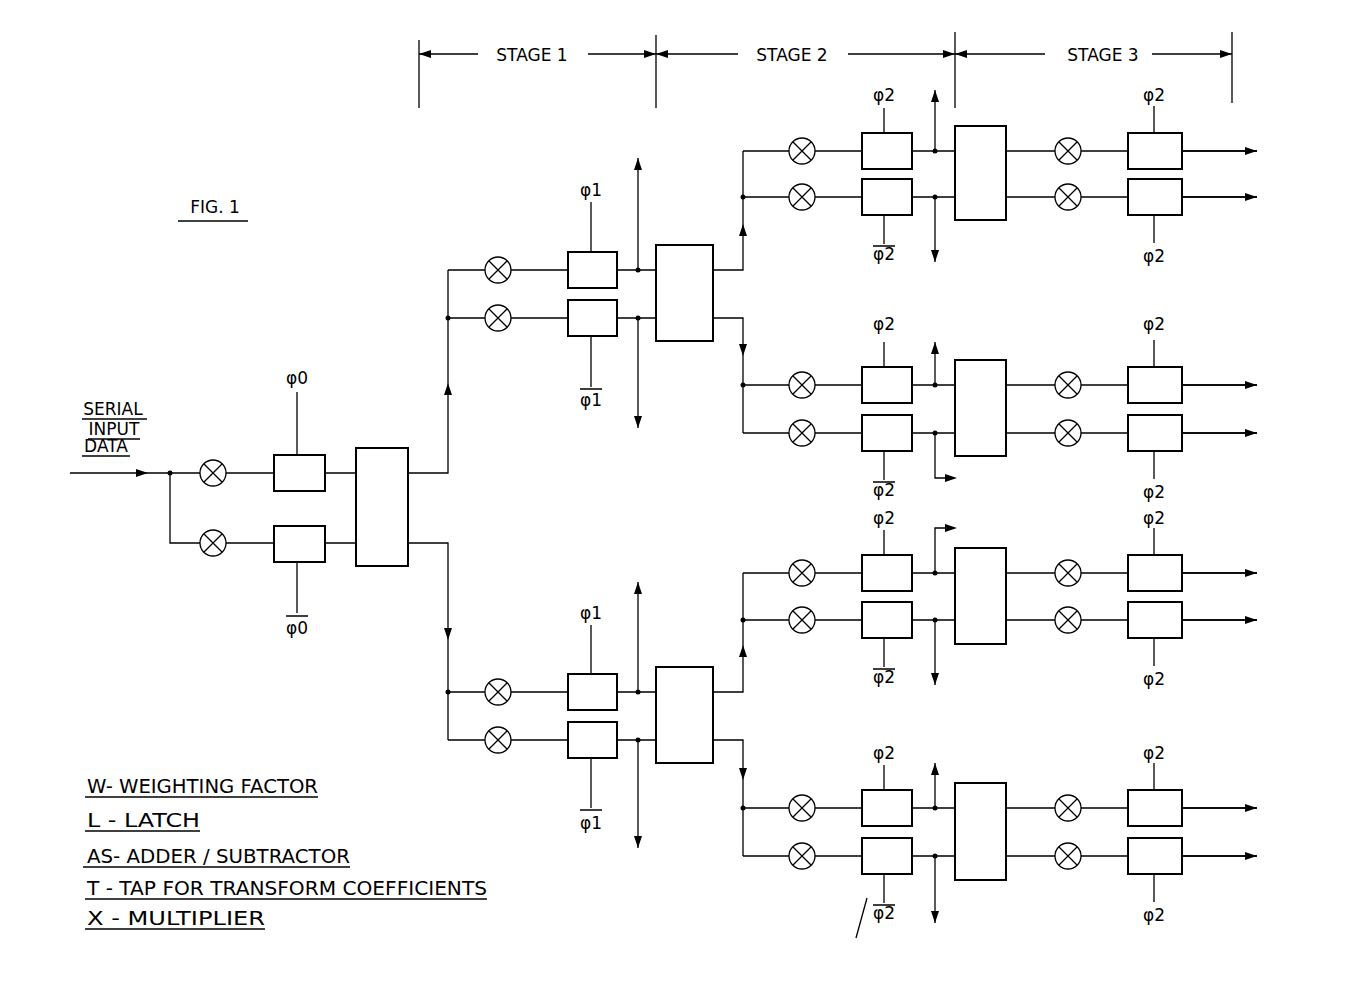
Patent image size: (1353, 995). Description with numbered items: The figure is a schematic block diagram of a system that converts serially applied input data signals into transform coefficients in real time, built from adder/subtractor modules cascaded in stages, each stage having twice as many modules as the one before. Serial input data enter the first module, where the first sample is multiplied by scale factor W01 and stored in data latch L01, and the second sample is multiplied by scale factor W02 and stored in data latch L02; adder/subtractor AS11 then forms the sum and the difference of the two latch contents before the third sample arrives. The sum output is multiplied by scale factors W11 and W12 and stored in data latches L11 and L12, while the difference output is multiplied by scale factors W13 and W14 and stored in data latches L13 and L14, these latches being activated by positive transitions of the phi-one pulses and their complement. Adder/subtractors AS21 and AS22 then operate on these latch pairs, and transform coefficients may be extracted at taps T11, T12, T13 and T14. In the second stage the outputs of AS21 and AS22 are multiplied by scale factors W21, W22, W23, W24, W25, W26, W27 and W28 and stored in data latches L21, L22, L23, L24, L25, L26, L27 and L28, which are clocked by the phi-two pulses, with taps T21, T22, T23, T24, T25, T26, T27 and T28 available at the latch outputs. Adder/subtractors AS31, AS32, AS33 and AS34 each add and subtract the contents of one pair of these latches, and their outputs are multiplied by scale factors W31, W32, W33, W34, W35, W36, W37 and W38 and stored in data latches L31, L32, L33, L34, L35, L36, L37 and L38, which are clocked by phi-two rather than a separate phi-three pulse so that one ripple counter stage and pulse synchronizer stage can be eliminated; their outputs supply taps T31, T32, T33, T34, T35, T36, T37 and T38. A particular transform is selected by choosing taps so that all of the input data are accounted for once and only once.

The scale factor W01 is at (213, 460).
The scale factor W02 is at (213, 556).
The scale factor W11 is at (498, 257).
The scale factor W12 is at (498, 331).
The scale factor W13 is at (498, 679).
The scale factor W14 is at (498, 753).
The scale factor W21 is at (802, 138).
The scale factor W22 is at (802, 210).
The scale factor W23 is at (802, 372).
The scale factor W24 is at (802, 446).
The scale factor W25 is at (802, 560).
The scale factor W26 is at (802, 633).
The scale factor W27 is at (802, 795).
The scale factor W28 is at (802, 869).
The scale factor W31 is at (1068, 138).
The scale factor W32 is at (1068, 210).
The scale factor W33 is at (1068, 372).
The scale factor W34 is at (1068, 446).
The scale factor W35 is at (1068, 560).
The scale factor W36 is at (1068, 633).
The scale factor W37 is at (1068, 795).
The scale factor W38 is at (1068, 869).
The data latch L01 is at (299, 473).
The data latch L02 is at (299, 544).
The data latch L11 is at (592, 270).
The data latch L12 is at (592, 318).
The data latch L13 is at (592, 692).
The data latch L14 is at (592, 740).
The data latch L21 is at (887, 151).
The data latch L22 is at (887, 197).
The data latch L23 is at (887, 385).
The data latch L24 is at (887, 433).
The data latch L25 is at (887, 573).
The data latch L26 is at (887, 620).
The data latch L27 is at (887, 808).
The data latch L28 is at (887, 856).
The data latch L31 is at (1155, 151).
The data latch L32 is at (1155, 197).
The data latch L33 is at (1155, 385).
The data latch L34 is at (1155, 433).
The data latch L35 is at (1155, 573).
The data latch L36 is at (1155, 620).
The data latch L37 is at (1155, 808).
The data latch L38 is at (1155, 856).
The adder/subtractor AS11 is at (381, 555).
The adder/subtractor AS21 is at (686, 322).
The adder/subtractor AS22 is at (675, 752).
The adder/subtractor AS31 is at (985, 205).
The adder/subtractor AS32 is at (975, 378).
The adder/subtractor AS33 is at (968, 622).
The adder/subtractor AS34 is at (980, 865).
The tap T11 is at (639, 202).
The tap T12 is at (639, 387).
The tap T13 is at (639, 624).
The tap T14 is at (642, 811).
The tap T21 is at (936, 106).
The tap T22 is at (936, 244).
The tap T23 is at (936, 349).
The tap T24 is at (965, 460).
The tap T25 is at (965, 545).
The tap T26 is at (936, 667).
The tap T27 is at (936, 773).
The tap T28 is at (936, 901).
The tap T31 is at (1245, 151).
The tap T32 is at (1245, 197).
The tap T33 is at (1245, 385).
The tap T34 is at (1245, 433).
The tap T35 is at (1245, 573).
The tap T36 is at (1245, 620).
The tap T37 is at (1245, 808).
The tap T38 is at (1245, 856).